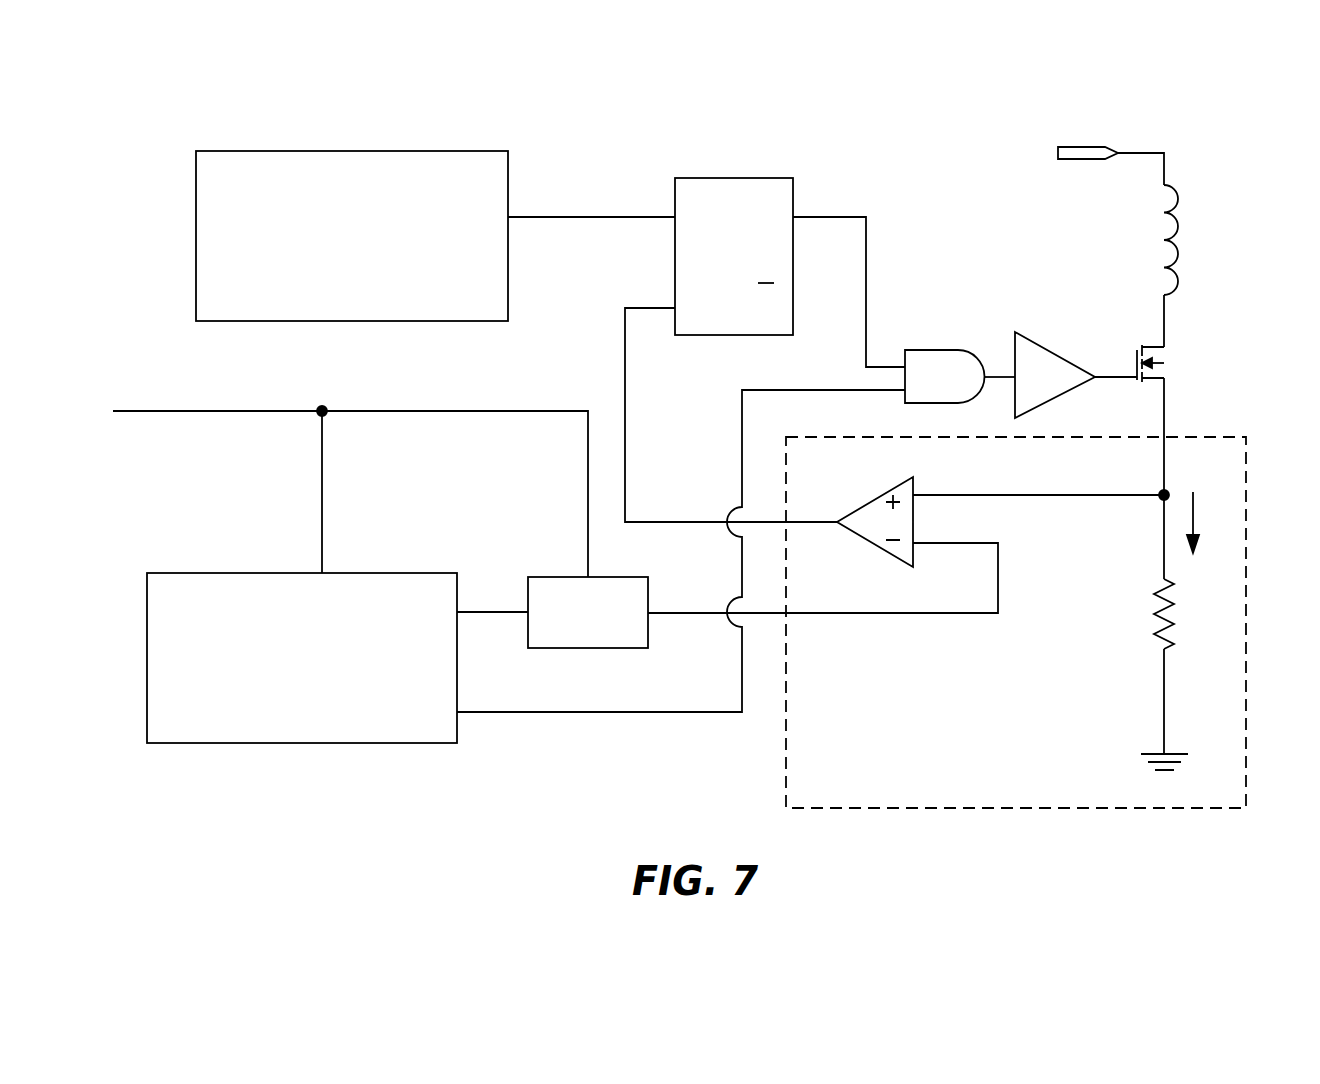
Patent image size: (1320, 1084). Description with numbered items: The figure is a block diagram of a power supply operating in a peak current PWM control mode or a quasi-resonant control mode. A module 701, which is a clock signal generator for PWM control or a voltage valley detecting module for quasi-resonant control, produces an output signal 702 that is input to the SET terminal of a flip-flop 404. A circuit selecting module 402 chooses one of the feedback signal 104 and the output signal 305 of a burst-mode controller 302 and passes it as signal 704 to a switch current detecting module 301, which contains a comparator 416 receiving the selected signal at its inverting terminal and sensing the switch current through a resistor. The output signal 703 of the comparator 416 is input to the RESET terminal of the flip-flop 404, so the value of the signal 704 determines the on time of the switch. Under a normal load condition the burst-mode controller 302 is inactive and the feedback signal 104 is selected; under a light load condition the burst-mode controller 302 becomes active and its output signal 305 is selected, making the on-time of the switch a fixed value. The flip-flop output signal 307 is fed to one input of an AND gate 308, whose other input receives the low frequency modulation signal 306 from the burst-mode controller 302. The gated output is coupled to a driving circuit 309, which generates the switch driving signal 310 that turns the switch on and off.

The module 701 is at (203, 151).
The output signal 702 is at (548, 217).
The flip-flop 404 is at (735, 178).
The output signal 307 is at (882, 366).
The AND gate 308 is at (957, 350).
The driving circuit 309 is at (1047, 350).
The switch driving signal 310 is at (1107, 377).
The switch current detecting module 301 is at (1180, 437).
The comparator 416 is at (880, 545).
The output signal 703 is at (680, 522).
The signal 704 is at (708, 615).
The low frequency modulation signal 306 is at (571, 712).
The feedback signal 104 is at (172, 411).
The burst-mode controller 302 is at (175, 573).
The output signal 305 is at (495, 612).
The circuit selecting module 402 is at (550, 577).